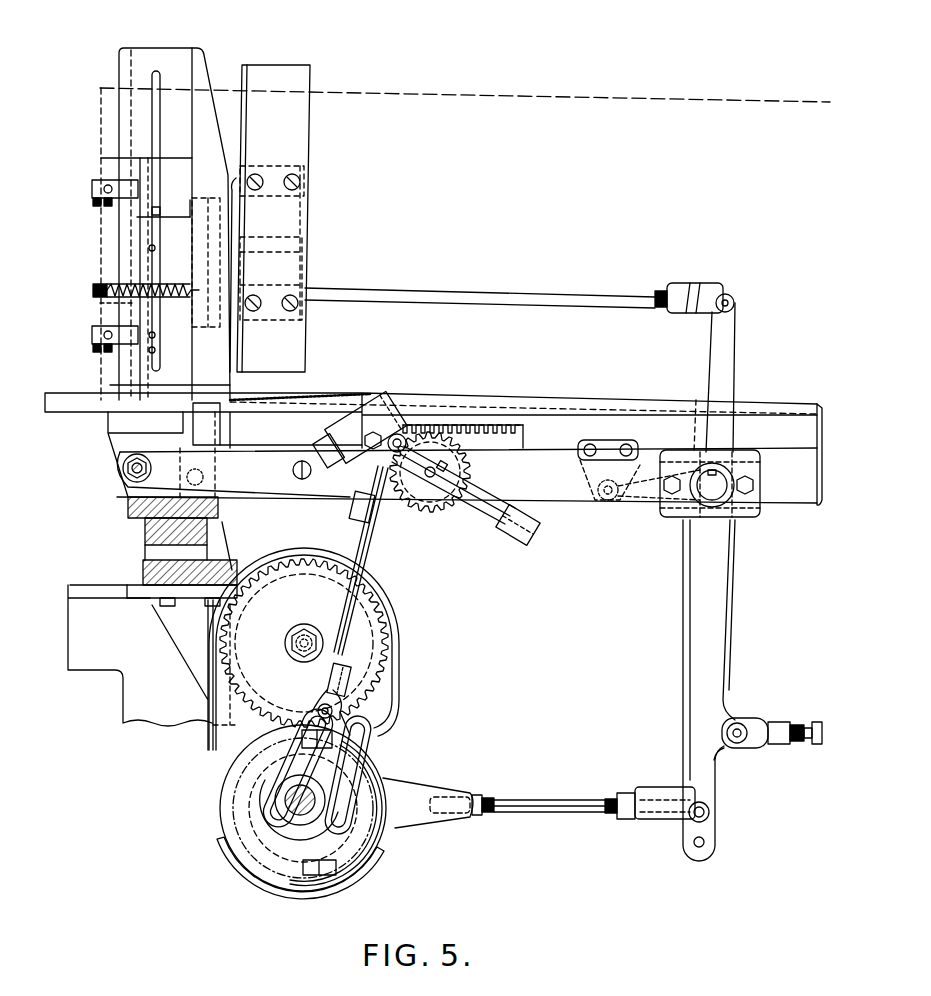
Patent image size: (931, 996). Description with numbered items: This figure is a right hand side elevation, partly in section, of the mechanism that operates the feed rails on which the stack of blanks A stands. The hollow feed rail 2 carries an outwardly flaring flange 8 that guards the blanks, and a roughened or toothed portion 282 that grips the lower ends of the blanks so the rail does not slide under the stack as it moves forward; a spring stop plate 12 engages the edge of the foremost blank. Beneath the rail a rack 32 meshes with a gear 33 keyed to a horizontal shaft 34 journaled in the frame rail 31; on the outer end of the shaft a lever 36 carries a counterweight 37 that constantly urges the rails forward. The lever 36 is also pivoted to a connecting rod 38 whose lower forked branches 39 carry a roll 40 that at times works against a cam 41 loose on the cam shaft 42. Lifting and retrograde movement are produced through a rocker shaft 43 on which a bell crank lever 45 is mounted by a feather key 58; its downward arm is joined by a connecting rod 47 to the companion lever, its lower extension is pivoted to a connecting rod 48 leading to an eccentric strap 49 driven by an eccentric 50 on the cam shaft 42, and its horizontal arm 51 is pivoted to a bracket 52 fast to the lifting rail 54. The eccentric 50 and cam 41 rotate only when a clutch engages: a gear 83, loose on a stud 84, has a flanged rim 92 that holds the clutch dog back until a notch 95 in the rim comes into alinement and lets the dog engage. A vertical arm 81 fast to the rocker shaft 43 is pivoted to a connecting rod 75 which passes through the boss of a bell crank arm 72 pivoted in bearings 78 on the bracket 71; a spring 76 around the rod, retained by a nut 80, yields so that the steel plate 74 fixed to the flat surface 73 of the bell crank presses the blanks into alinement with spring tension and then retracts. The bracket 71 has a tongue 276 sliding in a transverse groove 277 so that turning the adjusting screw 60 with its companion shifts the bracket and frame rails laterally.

The stack of blanks A is at (511, 95).
The bracket 71 is at (170, 62).
The spring stop plate 12 is at (92, 187).
The nut 80 is at (112, 290).
The spring 76 is at (110, 306).
The bearings 78 is at (212, 210).
The steel plate 74 is at (292, 119).
The flat surface 73 is at (292, 165).
The bell crank arm 72 is at (292, 236).
The connecting rod 75 is at (480, 298).
The vertical arm 81 is at (736, 355).
The feed rail 2 is at (338, 408).
The roughened or toothed portion 282 is at (258, 398).
The flange 8 is at (556, 404).
The frame rail 31 is at (572, 498).
The rack 32 is at (505, 440).
The adjusting screw 60 is at (210, 480).
The transverse groove 277 is at (128, 508).
The tongue 276 is at (145, 535).
The counterweight 37 is at (385, 424).
The gear 33 is at (438, 512).
The horizontal shaft 34 is at (424, 498).
The lever 36 is at (500, 520).
The connecting rod 38 is at (362, 522).
The gear 83 is at (378, 610).
The stud 84 is at (285, 644).
The flanged rim 92 is at (392, 644).
The roll 40 is at (340, 722).
The notch 95 is at (305, 710).
The branches 39 is at (283, 752).
The cam shaft 42 is at (292, 802).
The eccentric 50 is at (375, 855).
The eccentric strap 49 is at (410, 815).
The cam 41 is at (392, 790).
The connecting rod 48 is at (567, 812).
The bell crank lever 45 is at (695, 632).
The connecting rod 47 is at (812, 748).
The feather key 58 is at (720, 478).
The rocker shaft 43 is at (705, 490).
The bracket 52 is at (610, 450).
The lifting rail 54 is at (560, 440).
The horizontal arm 51 is at (640, 500).